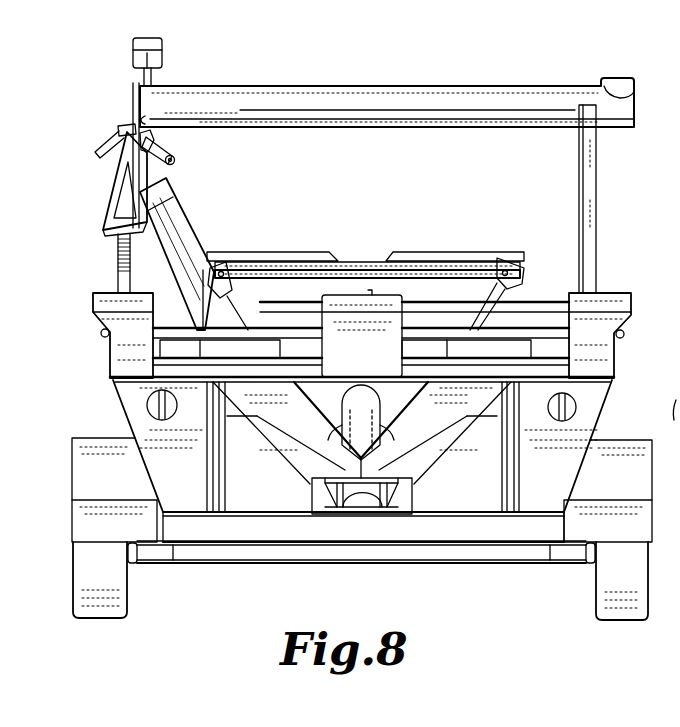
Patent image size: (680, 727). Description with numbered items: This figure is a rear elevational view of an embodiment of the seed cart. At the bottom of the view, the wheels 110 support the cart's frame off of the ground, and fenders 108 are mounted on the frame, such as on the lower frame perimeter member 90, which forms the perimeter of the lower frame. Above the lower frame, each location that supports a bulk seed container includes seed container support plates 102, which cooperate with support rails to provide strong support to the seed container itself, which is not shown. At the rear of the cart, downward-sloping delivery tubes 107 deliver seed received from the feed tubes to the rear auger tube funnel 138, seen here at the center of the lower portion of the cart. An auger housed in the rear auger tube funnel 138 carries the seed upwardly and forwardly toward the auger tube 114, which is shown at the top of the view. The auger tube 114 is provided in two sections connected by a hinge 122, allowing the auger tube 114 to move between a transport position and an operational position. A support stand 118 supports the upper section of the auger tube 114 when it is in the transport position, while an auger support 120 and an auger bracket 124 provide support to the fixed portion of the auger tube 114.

The lower frame perimeter member 90 is at (332, 553).
The seed container support plates 102 is at (627, 293).
The delivery tubes 107 is at (428, 412).
The fenders 108 is at (626, 440).
The wheels 110 is at (122, 597).
The auger tube 114 is at (391, 90).
The support stand 118 is at (597, 207).
The auger support 120 is at (118, 272).
The hinge 122 is at (128, 128).
The auger bracket 124 is at (107, 206).
The rear auger tube funnel 138 is at (378, 483).